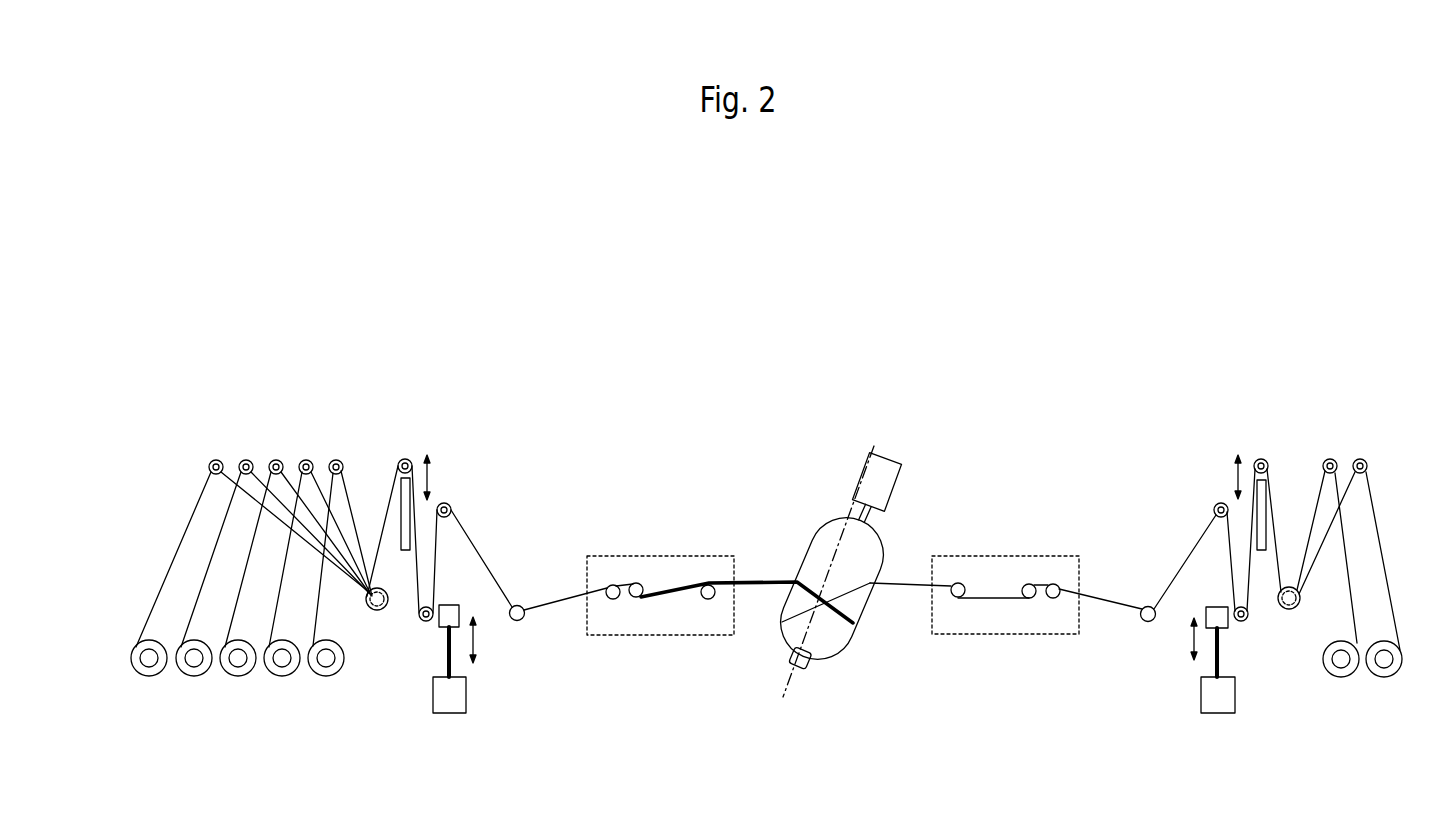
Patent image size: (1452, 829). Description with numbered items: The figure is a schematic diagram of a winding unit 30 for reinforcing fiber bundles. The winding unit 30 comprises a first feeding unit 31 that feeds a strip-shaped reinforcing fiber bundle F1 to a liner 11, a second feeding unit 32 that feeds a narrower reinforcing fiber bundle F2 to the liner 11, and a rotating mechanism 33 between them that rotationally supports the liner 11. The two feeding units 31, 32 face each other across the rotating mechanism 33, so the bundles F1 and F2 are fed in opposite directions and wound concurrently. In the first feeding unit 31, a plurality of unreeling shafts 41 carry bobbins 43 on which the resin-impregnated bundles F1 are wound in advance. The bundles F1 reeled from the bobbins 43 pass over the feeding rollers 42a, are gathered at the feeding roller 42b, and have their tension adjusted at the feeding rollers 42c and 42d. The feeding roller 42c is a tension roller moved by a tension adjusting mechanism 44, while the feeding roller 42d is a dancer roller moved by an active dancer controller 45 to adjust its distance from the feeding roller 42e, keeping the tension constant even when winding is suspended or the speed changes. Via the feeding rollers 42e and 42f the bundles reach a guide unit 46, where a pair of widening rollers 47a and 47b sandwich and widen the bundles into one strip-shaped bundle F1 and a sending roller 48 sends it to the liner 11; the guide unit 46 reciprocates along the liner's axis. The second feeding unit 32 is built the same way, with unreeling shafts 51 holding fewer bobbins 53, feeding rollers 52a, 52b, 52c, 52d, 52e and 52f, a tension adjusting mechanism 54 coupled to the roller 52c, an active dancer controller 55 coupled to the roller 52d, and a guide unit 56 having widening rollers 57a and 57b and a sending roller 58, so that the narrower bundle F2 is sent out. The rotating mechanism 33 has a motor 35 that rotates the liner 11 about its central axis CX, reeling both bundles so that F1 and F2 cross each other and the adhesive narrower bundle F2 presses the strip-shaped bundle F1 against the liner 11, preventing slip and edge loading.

The liner 11 is at (830, 520).
The winding unit 30 is at (178, 415).
The first feeding unit 31 is at (185, 500).
The second feeding unit 32 is at (1392, 494).
The rotating mechanism 33 is at (790, 442).
The motor 35 is at (884, 452).
The unreeling shafts 41 is at (149, 660).
The feeding rollers 42a is at (214, 460).
The feeding roller 42b is at (378, 610).
The feeding roller (tension roller) 42c is at (407, 458).
The feeding roller (dancer roller) 42d is at (425, 622).
The feeding roller 42e is at (448, 503).
The feeding roller 42f is at (521, 605).
The bobbins 43 is at (328, 642).
The tension adjusting mechanism 44 is at (410, 535).
The active dancer controller 45 is at (452, 713).
The guide unit 46 is at (626, 556).
The widening roller 47a is at (613, 600).
The widening roller 47b is at (640, 587).
The sending roller 48 is at (709, 600).
The unreeling shafts 51 is at (1385, 660).
The feeding rollers 52a is at (1330, 460).
The feeding roller 52b is at (1289, 610).
The feeding roller 52c is at (1259, 459).
The feeding roller 52d is at (1241, 621).
The feeding roller 52e is at (1218, 504).
The feeding roller 52f is at (1146, 606).
The bobbins 53 is at (1338, 643).
The tension adjusting mechanism 54 is at (1257, 533).
The active dancer controller 55 is at (1217, 713).
The guide unit 56 is at (1041, 556).
The widening roller 57a is at (1053, 600).
The widening roller 57b is at (1028, 584).
The sending roller 58 is at (958, 583).
The central axis CX is at (788, 690).
The reinforcing fiber bundle (strip-shaped) F1 is at (351, 488).
The reinforcing fiber bundle (narrower) F2 is at (883, 582).